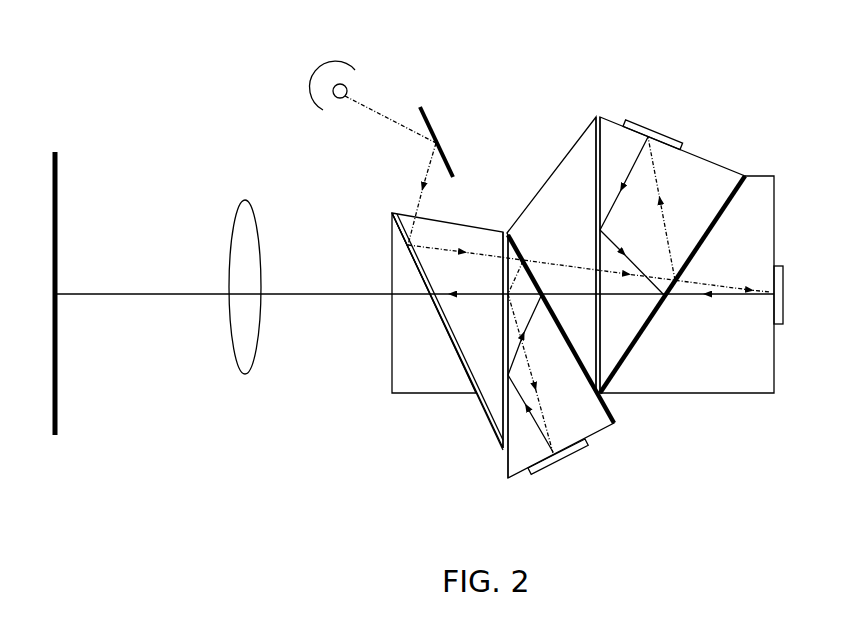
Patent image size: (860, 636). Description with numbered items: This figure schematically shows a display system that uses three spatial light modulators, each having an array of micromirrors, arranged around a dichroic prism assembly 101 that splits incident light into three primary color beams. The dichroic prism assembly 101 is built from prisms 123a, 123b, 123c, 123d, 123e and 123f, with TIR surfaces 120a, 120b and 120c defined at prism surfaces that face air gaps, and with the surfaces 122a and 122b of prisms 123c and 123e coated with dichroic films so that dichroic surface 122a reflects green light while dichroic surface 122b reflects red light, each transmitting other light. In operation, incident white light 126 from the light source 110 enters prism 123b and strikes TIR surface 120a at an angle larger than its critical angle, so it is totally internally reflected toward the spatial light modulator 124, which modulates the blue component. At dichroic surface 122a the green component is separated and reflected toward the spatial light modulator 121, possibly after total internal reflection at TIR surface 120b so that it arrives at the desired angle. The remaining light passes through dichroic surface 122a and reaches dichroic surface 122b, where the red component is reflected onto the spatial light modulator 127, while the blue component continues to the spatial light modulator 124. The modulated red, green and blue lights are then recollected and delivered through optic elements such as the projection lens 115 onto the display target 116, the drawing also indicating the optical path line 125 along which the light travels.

The dichroic prism assembly 101 is at (582, 132).
The light source 110 is at (359, 57).
The projection lens 115 is at (247, 200).
The display target 116 is at (57, 172).
The TIR surface 120a is at (492, 425).
The TIR surface 120b is at (508, 477).
The TIR surface 120c is at (600, 120).
The spatial light modulator 121 is at (596, 482).
The dichroic surface 122a is at (617, 418).
The dichroic surface 122b is at (745, 185).
The prism 123a is at (450, 384).
The prism 123b is at (497, 337).
The prism 123c is at (600, 430).
The prism 123d is at (585, 228).
The prism 123e is at (722, 196).
The prism 123f is at (750, 385).
The spatial light modulator 124 is at (827, 305).
The optical axis 125 is at (347, 288).
The incident white light 126 is at (391, 148).
The spatial light modulator 127 is at (677, 117).